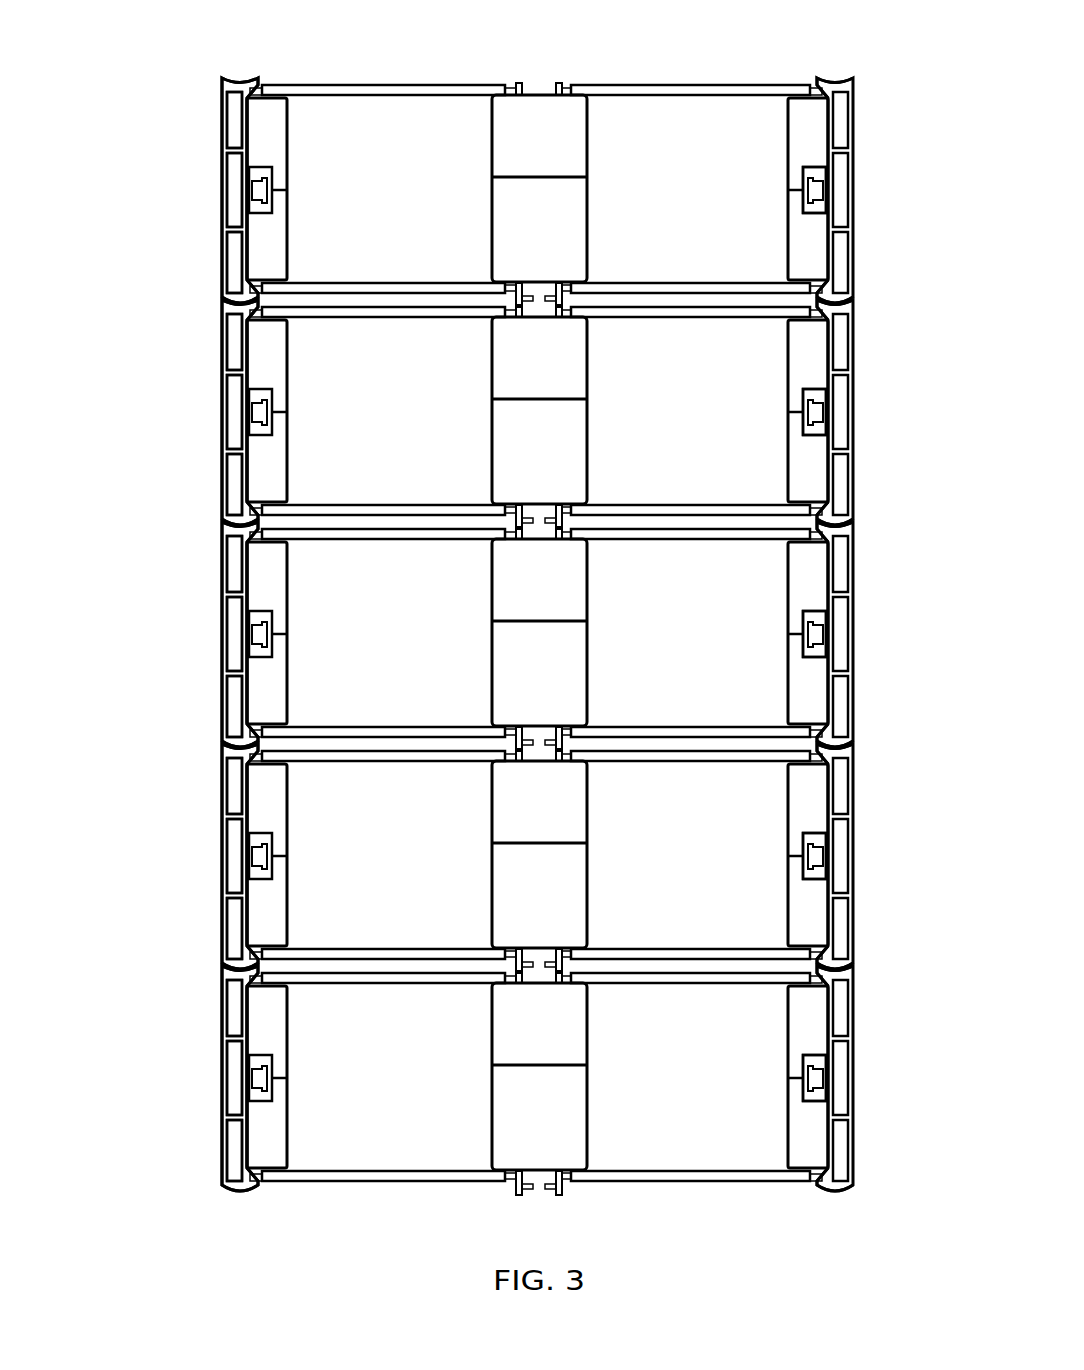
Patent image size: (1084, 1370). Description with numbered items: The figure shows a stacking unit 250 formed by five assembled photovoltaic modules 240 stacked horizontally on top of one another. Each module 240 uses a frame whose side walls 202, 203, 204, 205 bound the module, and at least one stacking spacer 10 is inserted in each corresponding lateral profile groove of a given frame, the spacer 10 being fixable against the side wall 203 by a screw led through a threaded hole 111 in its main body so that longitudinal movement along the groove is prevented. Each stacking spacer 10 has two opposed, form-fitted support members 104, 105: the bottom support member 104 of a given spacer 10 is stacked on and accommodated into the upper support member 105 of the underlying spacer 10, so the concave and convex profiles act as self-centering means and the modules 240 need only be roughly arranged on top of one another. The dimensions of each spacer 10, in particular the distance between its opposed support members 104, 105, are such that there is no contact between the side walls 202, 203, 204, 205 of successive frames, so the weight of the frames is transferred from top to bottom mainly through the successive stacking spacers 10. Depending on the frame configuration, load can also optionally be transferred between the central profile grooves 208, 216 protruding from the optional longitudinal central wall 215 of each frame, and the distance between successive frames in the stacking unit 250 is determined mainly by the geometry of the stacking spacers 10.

The stacking unit 250 is at (128, 74).
The stacking spacer 10 is at (535, 634).
The assembled photovoltaic module 240 is at (182, 634).
The upper support member 105 is at (867, 525).
The bottom support member 104 is at (868, 722).
The threaded hole 111 is at (861, 634).
The side wall 205 is at (303, 633).
The side wall 203 is at (772, 633).
The longitudinal central wall 215 is at (539, 632).
The side wall 204 is at (536, 537).
The side wall 202 is at (536, 729).
The central profile groove 208 is at (577, 555).
The central profile groove 216 is at (579, 714).